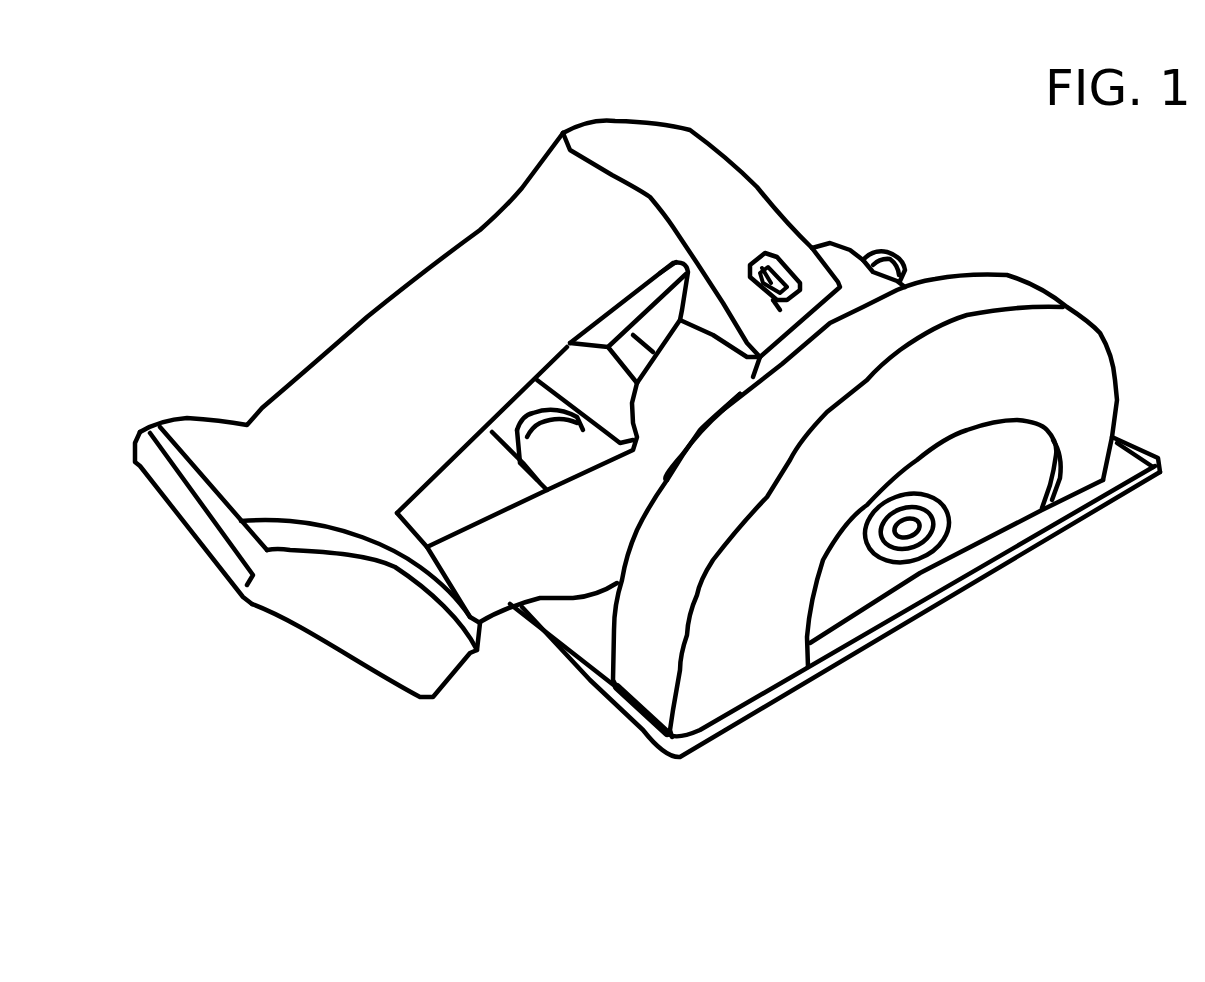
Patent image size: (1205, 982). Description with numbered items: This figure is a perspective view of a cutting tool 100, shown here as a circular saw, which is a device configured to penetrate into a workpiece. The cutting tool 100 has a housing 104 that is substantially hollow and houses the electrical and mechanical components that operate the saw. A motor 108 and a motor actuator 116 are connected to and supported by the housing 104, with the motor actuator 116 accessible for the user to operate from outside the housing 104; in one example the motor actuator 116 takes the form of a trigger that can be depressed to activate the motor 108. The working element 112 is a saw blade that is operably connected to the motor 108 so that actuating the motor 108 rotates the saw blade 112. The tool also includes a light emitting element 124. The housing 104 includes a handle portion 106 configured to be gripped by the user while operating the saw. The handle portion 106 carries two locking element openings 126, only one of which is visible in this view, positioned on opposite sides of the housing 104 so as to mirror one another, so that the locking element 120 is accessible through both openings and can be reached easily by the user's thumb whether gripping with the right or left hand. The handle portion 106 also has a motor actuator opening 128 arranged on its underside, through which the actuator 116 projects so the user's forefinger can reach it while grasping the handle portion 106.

The cutting tool 100 is at (257, 172).
The housing 104 is at (445, 290).
The handle portion 106 is at (610, 210).
The motor 108 is at (580, 365).
The working element 112 is at (967, 503).
The motor actuator 116 is at (637, 310).
The locking element 120 is at (783, 268).
The light emitting element 124 is at (890, 247).
The locking element openings 126 is at (775, 255).
The motor actuator opening 128 is at (655, 272).